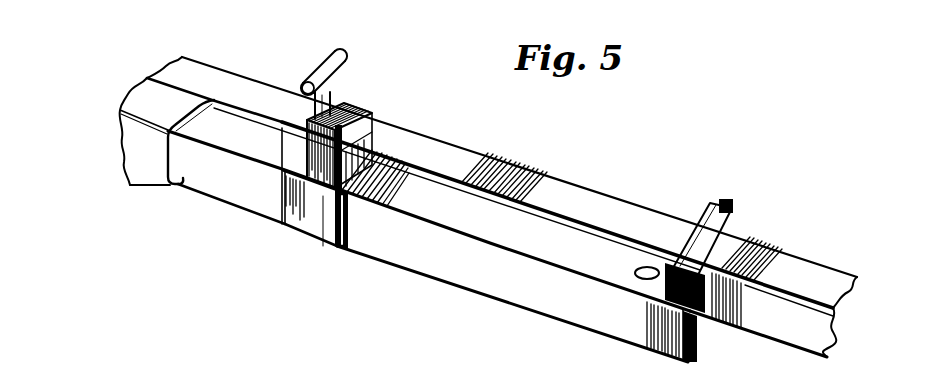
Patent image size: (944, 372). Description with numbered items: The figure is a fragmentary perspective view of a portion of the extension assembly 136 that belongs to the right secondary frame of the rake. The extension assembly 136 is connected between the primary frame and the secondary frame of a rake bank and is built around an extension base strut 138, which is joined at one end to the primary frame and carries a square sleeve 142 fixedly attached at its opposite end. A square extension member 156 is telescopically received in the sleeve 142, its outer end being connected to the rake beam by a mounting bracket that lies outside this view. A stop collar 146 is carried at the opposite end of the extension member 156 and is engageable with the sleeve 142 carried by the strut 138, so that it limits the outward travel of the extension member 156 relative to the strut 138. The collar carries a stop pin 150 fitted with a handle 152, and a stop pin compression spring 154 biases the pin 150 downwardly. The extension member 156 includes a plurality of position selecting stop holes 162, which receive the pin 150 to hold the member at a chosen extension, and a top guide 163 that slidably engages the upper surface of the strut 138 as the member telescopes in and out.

The extension assembly 136 is at (636, 157).
The extension base strut 138 is at (790, 266).
The square sleeve 142 is at (147, 166).
The stop collar 146 is at (323, 222).
The stop pin 150 is at (344, 92).
The handle 152 is at (342, 54).
The stop pin compression spring 154 is at (396, 124).
The square extension member 156 is at (466, 264).
The position selecting stop holes 162 is at (647, 270).
The top guide 163 is at (399, 158).